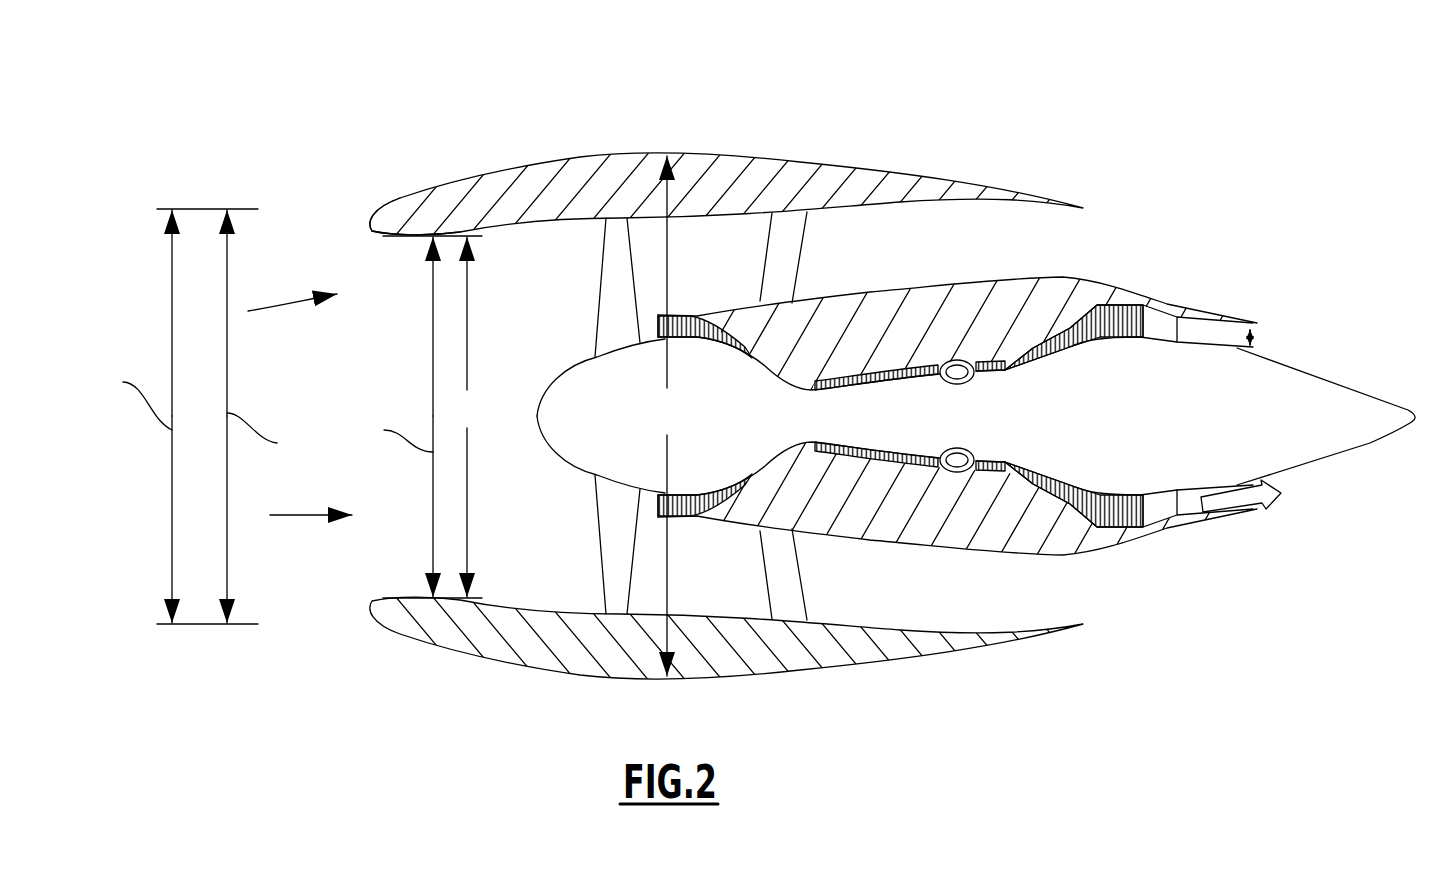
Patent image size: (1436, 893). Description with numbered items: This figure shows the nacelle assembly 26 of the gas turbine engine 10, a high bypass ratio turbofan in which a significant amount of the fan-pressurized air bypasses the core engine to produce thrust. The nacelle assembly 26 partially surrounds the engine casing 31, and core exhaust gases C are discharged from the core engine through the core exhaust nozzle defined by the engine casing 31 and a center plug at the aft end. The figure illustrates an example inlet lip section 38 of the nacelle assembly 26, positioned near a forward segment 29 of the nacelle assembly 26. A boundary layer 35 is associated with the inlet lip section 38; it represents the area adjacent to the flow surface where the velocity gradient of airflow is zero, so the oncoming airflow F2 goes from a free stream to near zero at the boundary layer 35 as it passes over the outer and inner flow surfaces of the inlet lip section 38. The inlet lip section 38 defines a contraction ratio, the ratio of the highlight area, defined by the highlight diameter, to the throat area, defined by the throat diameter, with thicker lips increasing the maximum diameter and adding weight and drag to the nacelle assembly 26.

The gas turbine engine 10 is at (751, 355).
The nacelle assembly 26 is at (712, 141).
The forward segment 29 is at (371, 188).
The engine casing 31 is at (1037, 307).
The boundary layer 35 is at (418, 248).
The inlet lip section 38 is at (378, 233).
The oncoming airflow F2 is at (290, 307).
The core exhaust gases C is at (1272, 500).